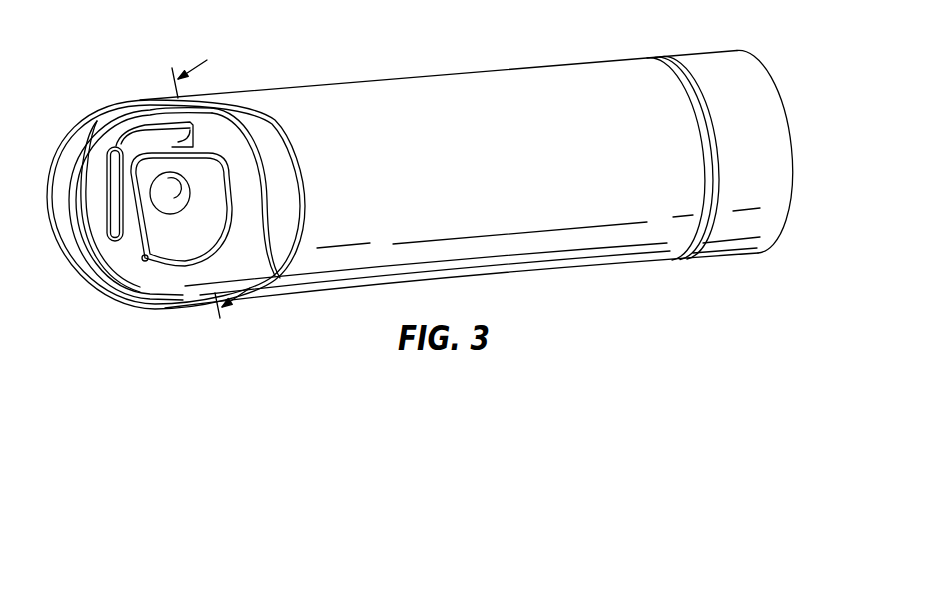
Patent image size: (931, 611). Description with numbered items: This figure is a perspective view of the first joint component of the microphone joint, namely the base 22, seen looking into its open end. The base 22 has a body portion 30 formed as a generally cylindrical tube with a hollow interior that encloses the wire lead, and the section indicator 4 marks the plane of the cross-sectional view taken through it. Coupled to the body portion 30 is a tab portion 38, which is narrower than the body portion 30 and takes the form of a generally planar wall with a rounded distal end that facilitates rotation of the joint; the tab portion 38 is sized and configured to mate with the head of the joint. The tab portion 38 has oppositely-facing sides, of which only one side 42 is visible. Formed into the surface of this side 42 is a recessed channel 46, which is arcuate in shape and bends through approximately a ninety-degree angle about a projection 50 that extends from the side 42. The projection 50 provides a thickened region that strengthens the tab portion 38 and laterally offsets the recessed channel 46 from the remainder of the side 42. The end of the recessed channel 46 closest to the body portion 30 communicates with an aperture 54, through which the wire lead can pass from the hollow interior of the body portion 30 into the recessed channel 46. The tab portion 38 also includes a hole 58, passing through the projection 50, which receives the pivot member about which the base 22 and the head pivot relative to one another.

The base 22 is at (535, 82).
The body portion 30 is at (562, 257).
The side 42 is at (240, 248).
The tab portion 38 is at (215, 272).
The projection 50 is at (167, 232).
The hole 58 is at (186, 190).
The aperture 54 is at (178, 142).
The recessed channel 46 is at (118, 146).
The section line 4- 4 is at (218, 180).